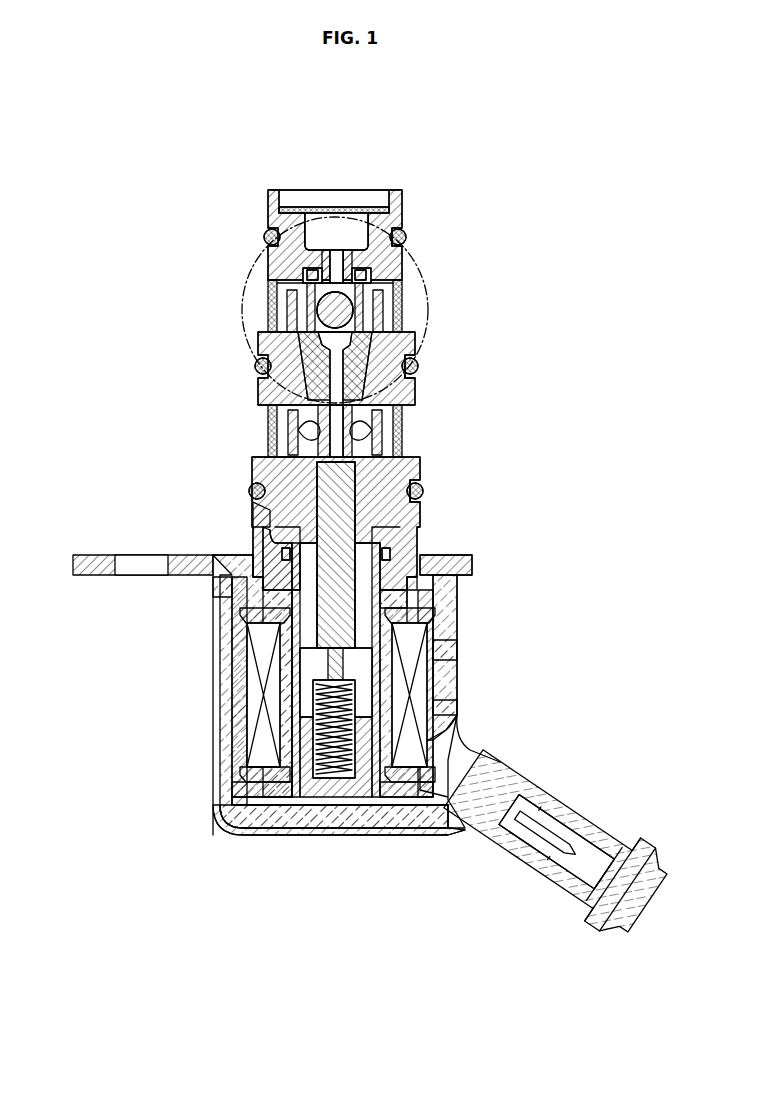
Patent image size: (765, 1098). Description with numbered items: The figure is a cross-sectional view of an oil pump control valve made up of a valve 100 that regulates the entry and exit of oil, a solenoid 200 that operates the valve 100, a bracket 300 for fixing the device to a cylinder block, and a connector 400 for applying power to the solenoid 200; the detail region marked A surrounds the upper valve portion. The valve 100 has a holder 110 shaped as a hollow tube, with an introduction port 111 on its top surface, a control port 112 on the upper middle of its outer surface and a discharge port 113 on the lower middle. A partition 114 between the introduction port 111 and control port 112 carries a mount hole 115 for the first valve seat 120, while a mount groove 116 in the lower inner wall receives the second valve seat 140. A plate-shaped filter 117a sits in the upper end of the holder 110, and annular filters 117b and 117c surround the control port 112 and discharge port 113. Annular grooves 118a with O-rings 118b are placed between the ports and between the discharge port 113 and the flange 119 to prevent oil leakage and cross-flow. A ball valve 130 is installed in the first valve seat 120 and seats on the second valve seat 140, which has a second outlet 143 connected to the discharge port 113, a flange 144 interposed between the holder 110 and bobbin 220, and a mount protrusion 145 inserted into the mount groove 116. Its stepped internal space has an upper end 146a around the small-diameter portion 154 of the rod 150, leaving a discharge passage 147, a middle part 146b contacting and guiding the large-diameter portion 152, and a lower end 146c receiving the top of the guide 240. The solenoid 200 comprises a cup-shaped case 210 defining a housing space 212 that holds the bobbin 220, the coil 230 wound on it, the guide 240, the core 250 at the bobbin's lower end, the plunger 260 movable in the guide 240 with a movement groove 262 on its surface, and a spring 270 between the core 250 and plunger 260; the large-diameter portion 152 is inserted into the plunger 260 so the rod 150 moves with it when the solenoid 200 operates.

The valve 100 is at (406, 187).
The holder 110 is at (420, 468).
The introduction port 111 is at (313, 222).
The control port 112 is at (270, 320).
The discharge port 113 is at (283, 440).
The partition 114 is at (264, 237).
The mount hole 115 is at (305, 275).
The mount groove 116 is at (258, 512).
The filter 117a is at (362, 208).
The filter 117b is at (270, 296).
The filter 117c is at (270, 415).
The groove 118a is at (402, 247).
The O-ring 118b is at (404, 233).
The flange 119 is at (222, 590).
The first valve seat 120 is at (352, 265).
The ball valve 130 is at (352, 313).
The second valve seat 140 is at (372, 430).
The second outlet 143 is at (365, 440).
The flange 144 is at (407, 607).
The mount protrusion 145 is at (277, 527).
The upper end of internal space 146a is at (256, 364).
The middle part of internal space 146b is at (251, 487).
The lower end of internal space 146c is at (416, 578).
The discharge passage 147 is at (370, 345).
The rod 150 is at (563, 535).
The large-diameter portion 152 is at (345, 520).
The small-diameter portion 154 is at (305, 385).
The solenoid 200 is at (222, 830).
The case 210 is at (455, 685).
The housing space 212 is at (437, 650).
The bobbin 220 is at (252, 685).
The coil 230 is at (245, 722).
The guide 240 is at (462, 720).
The core 250 is at (300, 775).
The plunger 260 is at (236, 648).
The movement groove 262 is at (243, 616).
The spring 270 is at (300, 740).
The bracket 300 is at (92, 552).
The connector 400 is at (580, 792).
The detail region A is at (430, 292).